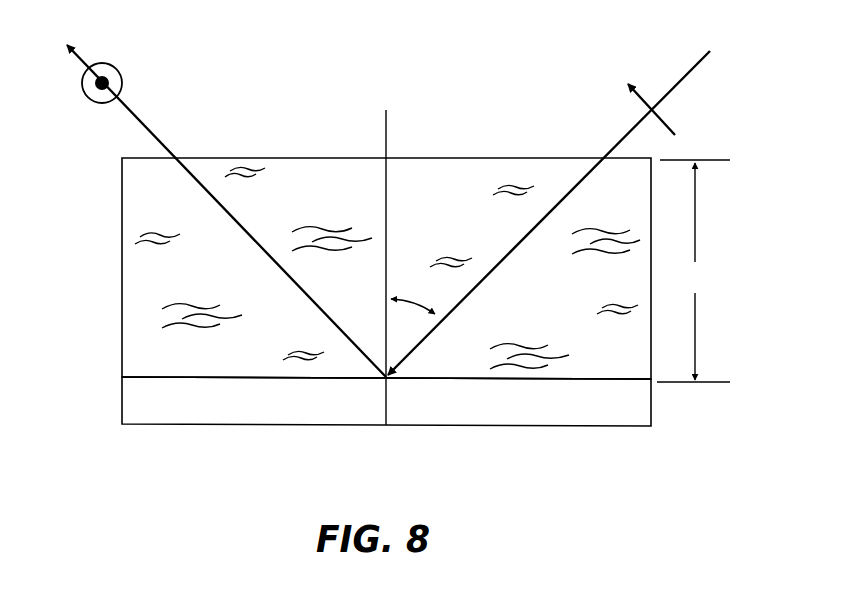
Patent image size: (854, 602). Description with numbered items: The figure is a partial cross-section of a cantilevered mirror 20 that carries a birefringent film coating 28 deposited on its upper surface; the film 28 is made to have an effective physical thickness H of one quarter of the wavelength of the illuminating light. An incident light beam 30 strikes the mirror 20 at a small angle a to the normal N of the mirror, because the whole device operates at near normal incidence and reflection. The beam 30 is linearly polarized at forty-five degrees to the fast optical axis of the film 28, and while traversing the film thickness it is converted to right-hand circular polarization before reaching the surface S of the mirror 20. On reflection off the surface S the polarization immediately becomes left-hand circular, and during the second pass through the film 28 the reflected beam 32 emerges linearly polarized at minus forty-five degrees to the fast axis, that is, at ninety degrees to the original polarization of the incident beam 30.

The mirror 20 is at (232, 415).
The birefringent film coating 28 is at (479, 179).
The incident light beam 30 is at (622, 137).
The reflected beam 32 is at (152, 134).
The normal N is at (388, 143).
The surface S is at (153, 376).
The effective physical thickness H is at (693, 271).
The angle a is at (413, 298).